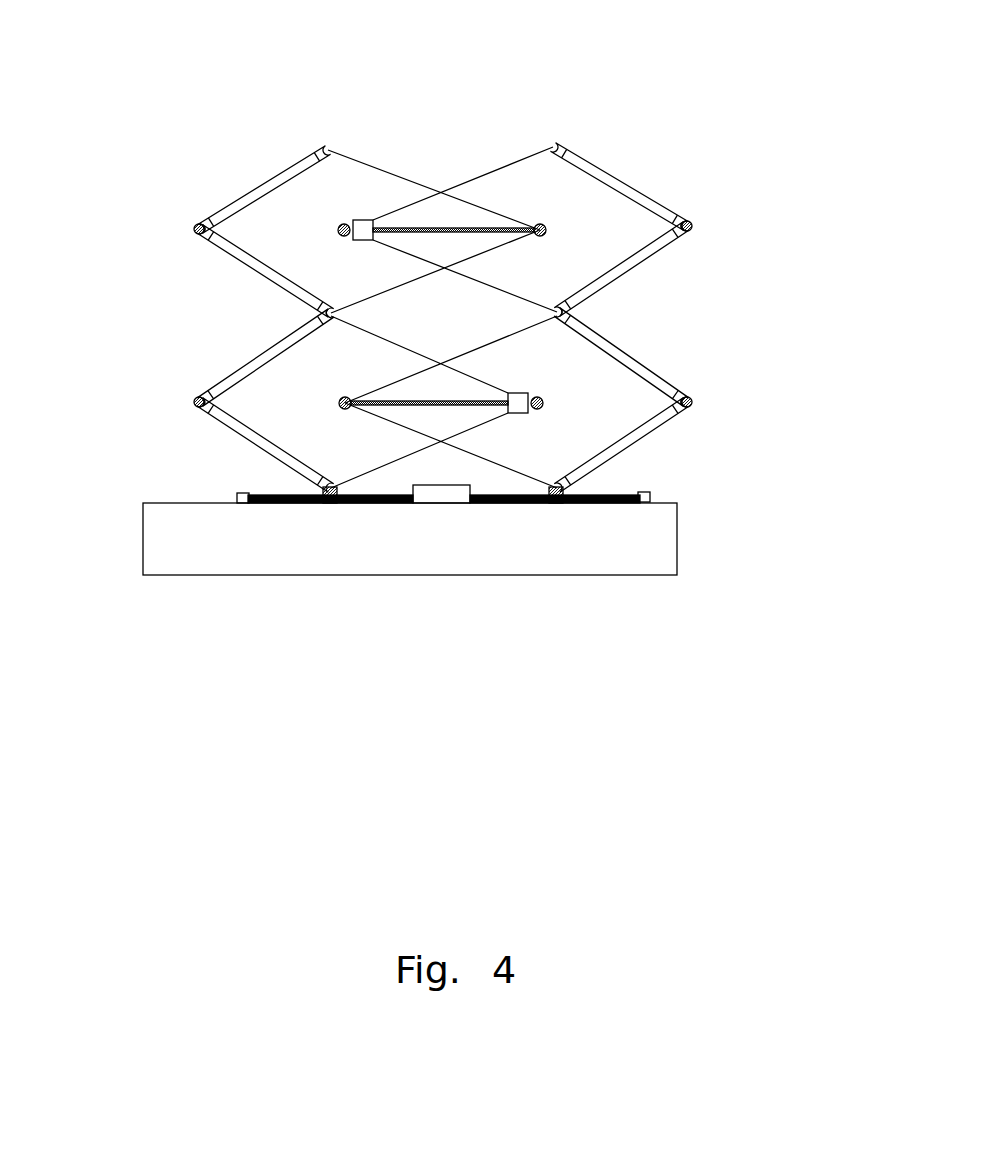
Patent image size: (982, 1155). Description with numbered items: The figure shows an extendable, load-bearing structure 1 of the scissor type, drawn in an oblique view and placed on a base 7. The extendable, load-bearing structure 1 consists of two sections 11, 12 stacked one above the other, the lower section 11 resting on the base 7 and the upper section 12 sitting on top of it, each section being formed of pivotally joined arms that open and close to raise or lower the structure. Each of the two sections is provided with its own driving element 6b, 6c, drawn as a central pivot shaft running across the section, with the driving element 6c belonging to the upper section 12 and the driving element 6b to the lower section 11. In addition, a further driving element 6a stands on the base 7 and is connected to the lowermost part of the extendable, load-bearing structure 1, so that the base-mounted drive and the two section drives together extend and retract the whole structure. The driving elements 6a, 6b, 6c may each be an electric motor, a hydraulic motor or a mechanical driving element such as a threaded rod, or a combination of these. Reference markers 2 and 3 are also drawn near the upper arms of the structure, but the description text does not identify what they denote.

The extendable, load-bearing structure 1 is at (242, 100).
The scissor mechanism 2 is at (434, 97).
The support arm 3 is at (640, 147).
The driving element 6a is at (472, 486).
The driving element 6b is at (530, 395).
The driving element 6c is at (353, 222).
The base 7 is at (677, 558).
The section 11 is at (202, 436).
The section 12 is at (200, 263).